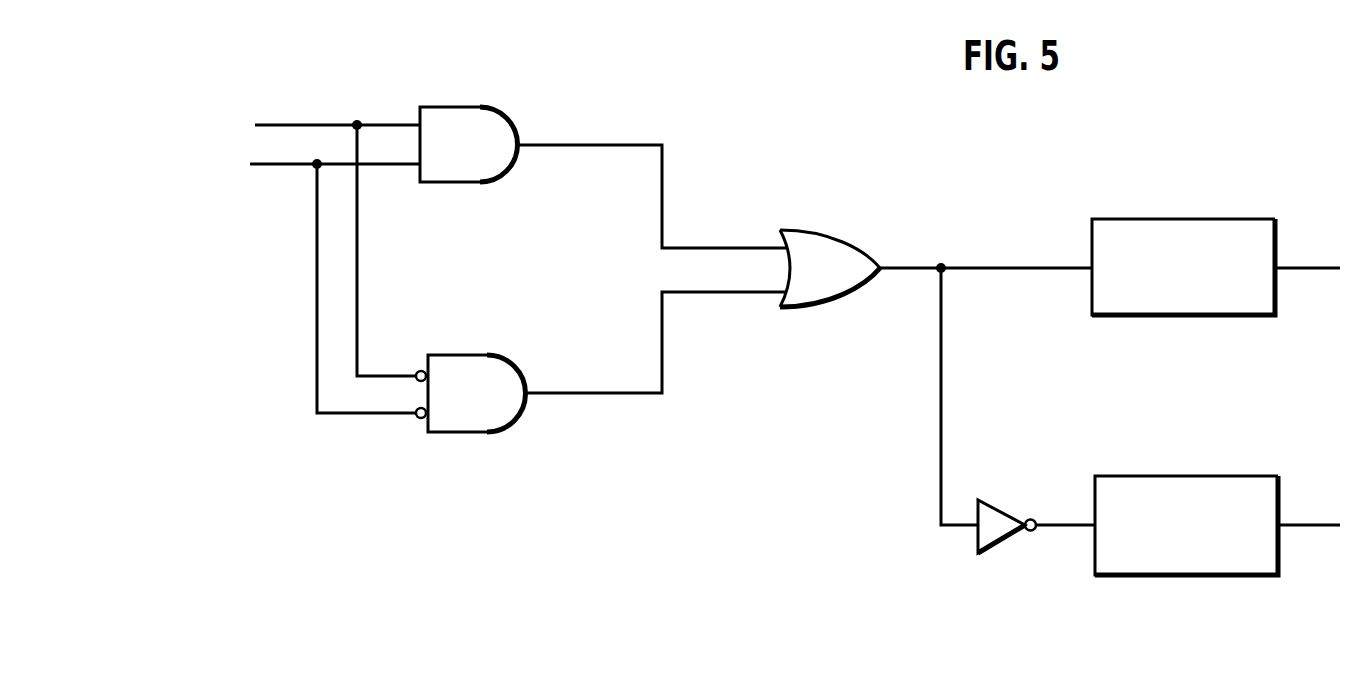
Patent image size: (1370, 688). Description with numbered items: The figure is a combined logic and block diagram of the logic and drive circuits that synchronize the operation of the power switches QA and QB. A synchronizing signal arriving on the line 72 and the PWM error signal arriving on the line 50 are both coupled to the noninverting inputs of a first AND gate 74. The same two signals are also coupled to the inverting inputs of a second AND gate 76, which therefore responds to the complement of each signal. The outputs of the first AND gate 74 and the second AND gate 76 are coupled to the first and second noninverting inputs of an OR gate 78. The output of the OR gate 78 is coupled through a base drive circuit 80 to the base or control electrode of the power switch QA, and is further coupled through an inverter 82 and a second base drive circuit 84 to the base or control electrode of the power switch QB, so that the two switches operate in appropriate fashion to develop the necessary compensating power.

The line 50 is at (283, 165).
The line 72 is at (290, 124).
The first AND gate 74 is at (490, 117).
The second AND gate 76 is at (503, 367).
The OR gate 78 is at (825, 235).
The base drive circuit 80 is at (1173, 223).
The inverter 82 is at (993, 543).
The base drive circuit 84 is at (1217, 565).